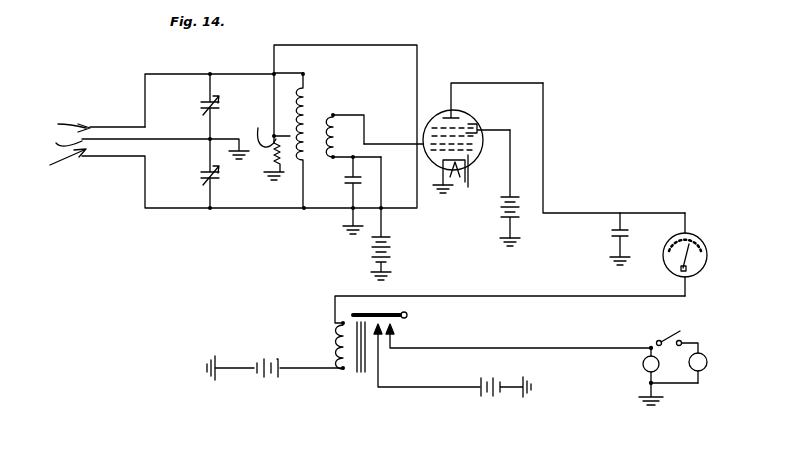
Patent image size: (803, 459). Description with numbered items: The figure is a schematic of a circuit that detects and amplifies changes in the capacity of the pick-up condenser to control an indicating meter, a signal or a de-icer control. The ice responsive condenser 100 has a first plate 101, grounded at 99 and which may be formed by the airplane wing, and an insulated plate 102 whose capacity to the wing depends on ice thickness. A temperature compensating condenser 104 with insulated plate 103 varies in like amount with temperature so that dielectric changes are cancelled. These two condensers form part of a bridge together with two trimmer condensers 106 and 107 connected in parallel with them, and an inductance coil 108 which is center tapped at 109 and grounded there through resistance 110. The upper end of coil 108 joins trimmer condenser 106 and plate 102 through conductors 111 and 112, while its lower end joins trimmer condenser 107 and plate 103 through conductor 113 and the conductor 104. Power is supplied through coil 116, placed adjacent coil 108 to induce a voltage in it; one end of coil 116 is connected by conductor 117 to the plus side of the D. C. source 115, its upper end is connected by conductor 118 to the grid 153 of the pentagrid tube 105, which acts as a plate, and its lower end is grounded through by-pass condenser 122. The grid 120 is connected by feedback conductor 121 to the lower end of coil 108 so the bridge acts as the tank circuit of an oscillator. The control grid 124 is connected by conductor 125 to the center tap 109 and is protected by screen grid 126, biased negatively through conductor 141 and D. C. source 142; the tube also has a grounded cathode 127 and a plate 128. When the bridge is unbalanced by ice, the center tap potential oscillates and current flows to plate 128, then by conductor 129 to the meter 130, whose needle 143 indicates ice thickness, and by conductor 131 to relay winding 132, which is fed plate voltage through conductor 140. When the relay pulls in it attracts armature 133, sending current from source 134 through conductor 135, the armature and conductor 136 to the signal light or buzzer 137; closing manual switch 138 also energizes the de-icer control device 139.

The ground 99 is at (223, 138).
The ice responsive condenser 100 is at (60, 125).
The first plate 101 is at (120, 141).
The plate 102 is at (106, 126).
The insulated plate 103 is at (113, 158).
The temperature compensating condenser 104 is at (174, 229).
The vacuum tube 105 is at (480, 143).
The trimmer condenser 106 is at (219, 103).
The trimmer condenser 107 is at (219, 181).
The inductance coil 108 is at (308, 108).
The center tap 109 is at (286, 158).
The resistance 110 is at (265, 129).
The conductor 111 is at (237, 73).
The conductor 112 is at (167, 73).
The conductor 113 is at (258, 211).
The source of D. C. potential 115 is at (396, 230).
The coil 116 is at (338, 125).
The conductor 117 is at (382, 160).
The conductor 118 is at (380, 143).
The grid 120 is at (466, 169).
The conductor 121 is at (408, 206).
The by-pass condenser 122 is at (349, 181).
The control grid 124 is at (466, 124).
The conductor 125 is at (376, 44).
The screen grid 126 is at (483, 121).
The cathode 127 is at (471, 184).
The plate 128 is at (450, 110).
The conductor 129 is at (546, 189).
The meter 130 is at (704, 266).
The conductor 131 is at (548, 294).
The relay winding 132 is at (340, 336).
The armature 133 is at (363, 313).
The source of supply 134 is at (495, 398).
The conductor 135 is at (405, 389).
The conductor 136 is at (419, 349).
The signal light or buzzer 137 is at (643, 371).
The manual switch 138 is at (668, 334).
The control device 139 is at (707, 371).
The conductor 140 is at (311, 369).
The conductor 141 is at (511, 176).
The source of D. C. potential 142 is at (514, 224).
The needle 143 is at (707, 253).
The grid 153 is at (479, 151).